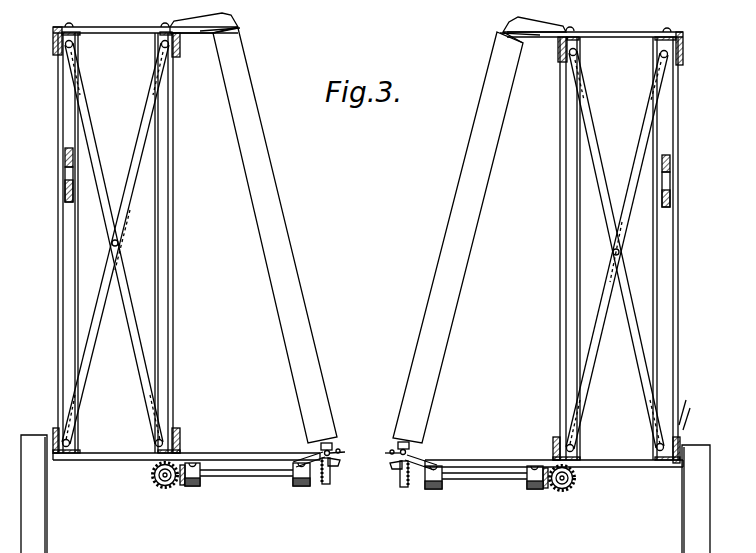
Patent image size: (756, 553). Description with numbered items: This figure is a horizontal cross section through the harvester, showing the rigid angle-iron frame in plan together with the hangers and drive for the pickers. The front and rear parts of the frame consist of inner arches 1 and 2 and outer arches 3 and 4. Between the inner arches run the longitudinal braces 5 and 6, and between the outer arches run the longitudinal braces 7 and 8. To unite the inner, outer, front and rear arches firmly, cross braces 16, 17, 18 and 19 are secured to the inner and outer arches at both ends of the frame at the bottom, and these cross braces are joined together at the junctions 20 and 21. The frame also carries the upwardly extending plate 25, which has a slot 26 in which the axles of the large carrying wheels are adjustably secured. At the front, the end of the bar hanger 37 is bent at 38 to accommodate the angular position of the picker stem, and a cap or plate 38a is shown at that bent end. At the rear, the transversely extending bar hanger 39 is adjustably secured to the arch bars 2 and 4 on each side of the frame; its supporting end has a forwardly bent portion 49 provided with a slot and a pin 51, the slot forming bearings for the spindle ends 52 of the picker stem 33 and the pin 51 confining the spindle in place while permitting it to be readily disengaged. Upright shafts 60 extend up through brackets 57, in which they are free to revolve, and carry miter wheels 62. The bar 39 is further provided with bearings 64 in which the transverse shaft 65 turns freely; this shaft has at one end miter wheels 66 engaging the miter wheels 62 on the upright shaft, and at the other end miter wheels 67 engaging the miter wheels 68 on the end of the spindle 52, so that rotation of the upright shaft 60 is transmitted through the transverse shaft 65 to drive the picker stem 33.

The inner arch 1 is at (180, 50).
The inner arch 2 is at (180, 445).
The outer arch 3 is at (53, 50).
The outer arch 4 is at (53, 430).
The longitudinal brace 5 is at (173, 282).
The longitudinal brace 6 is at (560, 246).
The longitudinal brace 7 is at (60, 265).
The longitudinal brace 8 is at (678, 264).
The cross brace 16 is at (128, 205).
The cross brace 17 is at (96, 138).
The cross brace 18 is at (601, 215).
The cross brace 19 is at (630, 218).
The junction of cross braces 20 is at (118, 243).
The junction of cross braces 21 is at (619, 252).
The upwardly extending plate 25 is at (65, 158).
The slot 26 is at (65, 180).
The picker stem 33 is at (270, 142).
The bar hanger 37 is at (118, 34).
The bent end of bar hanger 38 is at (222, 30).
The cap plate 38a is at (236, 22).
The bar hanger 39 is at (110, 462).
The forwardly bent portion 49 is at (305, 458).
The pin 51 is at (389, 452).
The spindle end 52 is at (331, 450).
The bracket 57 is at (341, 452).
The upright shaft 60 is at (160, 475).
The miter wheel 62 is at (160, 487).
The bearing 64 is at (200, 484).
The transverse shaft 65 is at (252, 478).
The miter wheel 66 is at (183, 485).
The miter wheel 67 is at (327, 484).
The miter wheel 68 is at (336, 465).